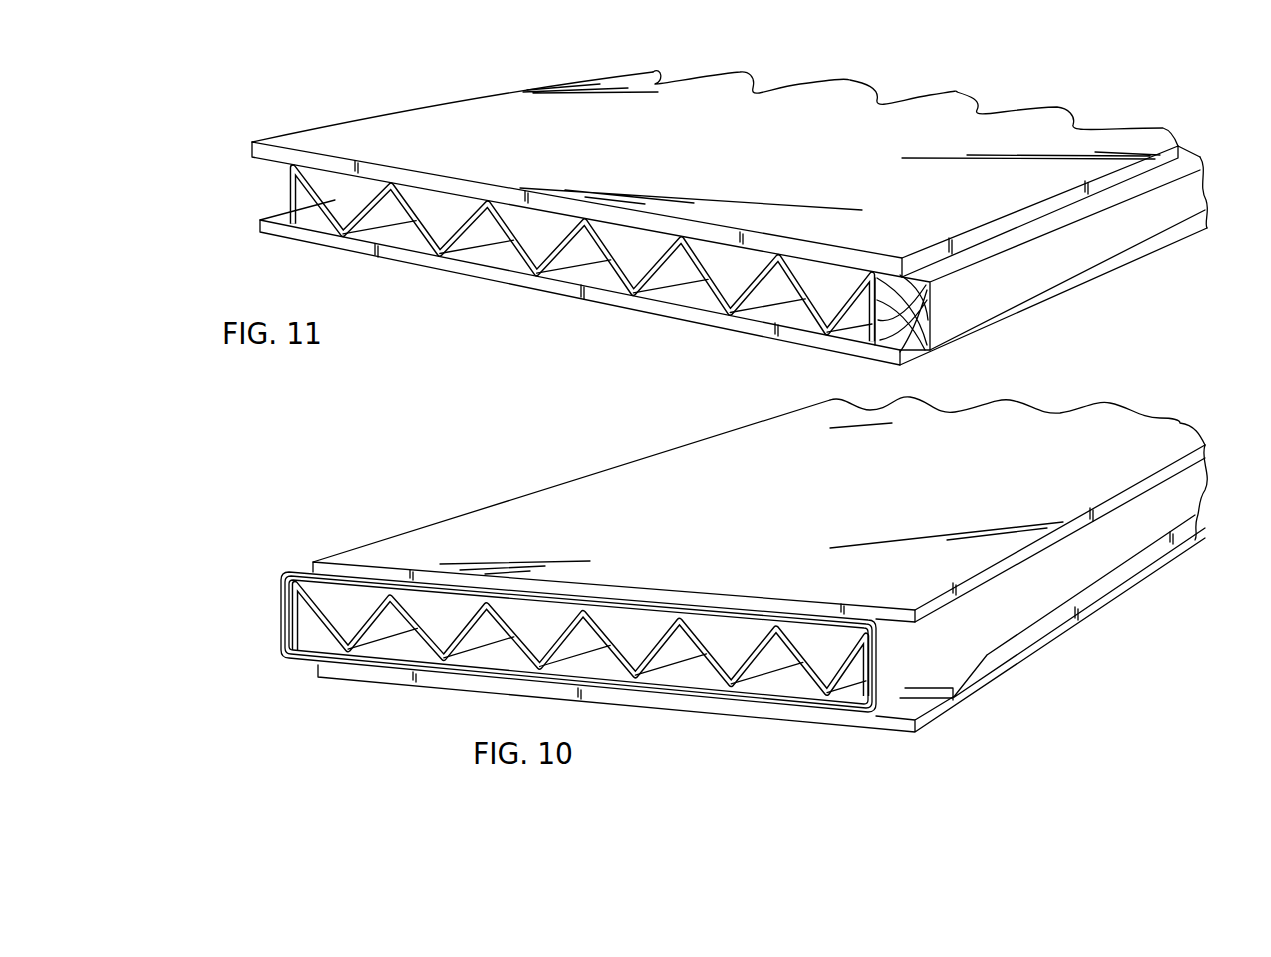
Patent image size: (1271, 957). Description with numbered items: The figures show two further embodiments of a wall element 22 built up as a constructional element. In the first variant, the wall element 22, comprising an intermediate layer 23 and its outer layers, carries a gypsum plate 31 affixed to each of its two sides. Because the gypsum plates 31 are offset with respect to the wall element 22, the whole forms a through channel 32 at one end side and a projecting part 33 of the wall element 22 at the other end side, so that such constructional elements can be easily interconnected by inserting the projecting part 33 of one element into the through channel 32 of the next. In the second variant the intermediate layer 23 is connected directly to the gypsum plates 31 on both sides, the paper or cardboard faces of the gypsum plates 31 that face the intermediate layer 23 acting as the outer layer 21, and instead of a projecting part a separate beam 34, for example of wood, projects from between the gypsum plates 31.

In FIG. 11, the outer layer 21 is at (695, 143).
In FIG. 10, the outer layer 21 is at (778, 686).
In FIG. 10, the wall element 22 is at (281, 600).
In FIG. 11, the intermediate layer 23 is at (706, 292).
In FIG. 10, the intermediate layer 23 is at (697, 624).
In FIG. 11, the gypsum plate 31 is at (280, 222).
In FIG. 10, the gypsum plate 31 is at (987, 655).
In FIG. 10, the through channel 32 is at (1102, 548).
In FIG. 10, the projecting part 33 is at (292, 670).
In FIG. 11, the separate beam 34 is at (1077, 253).